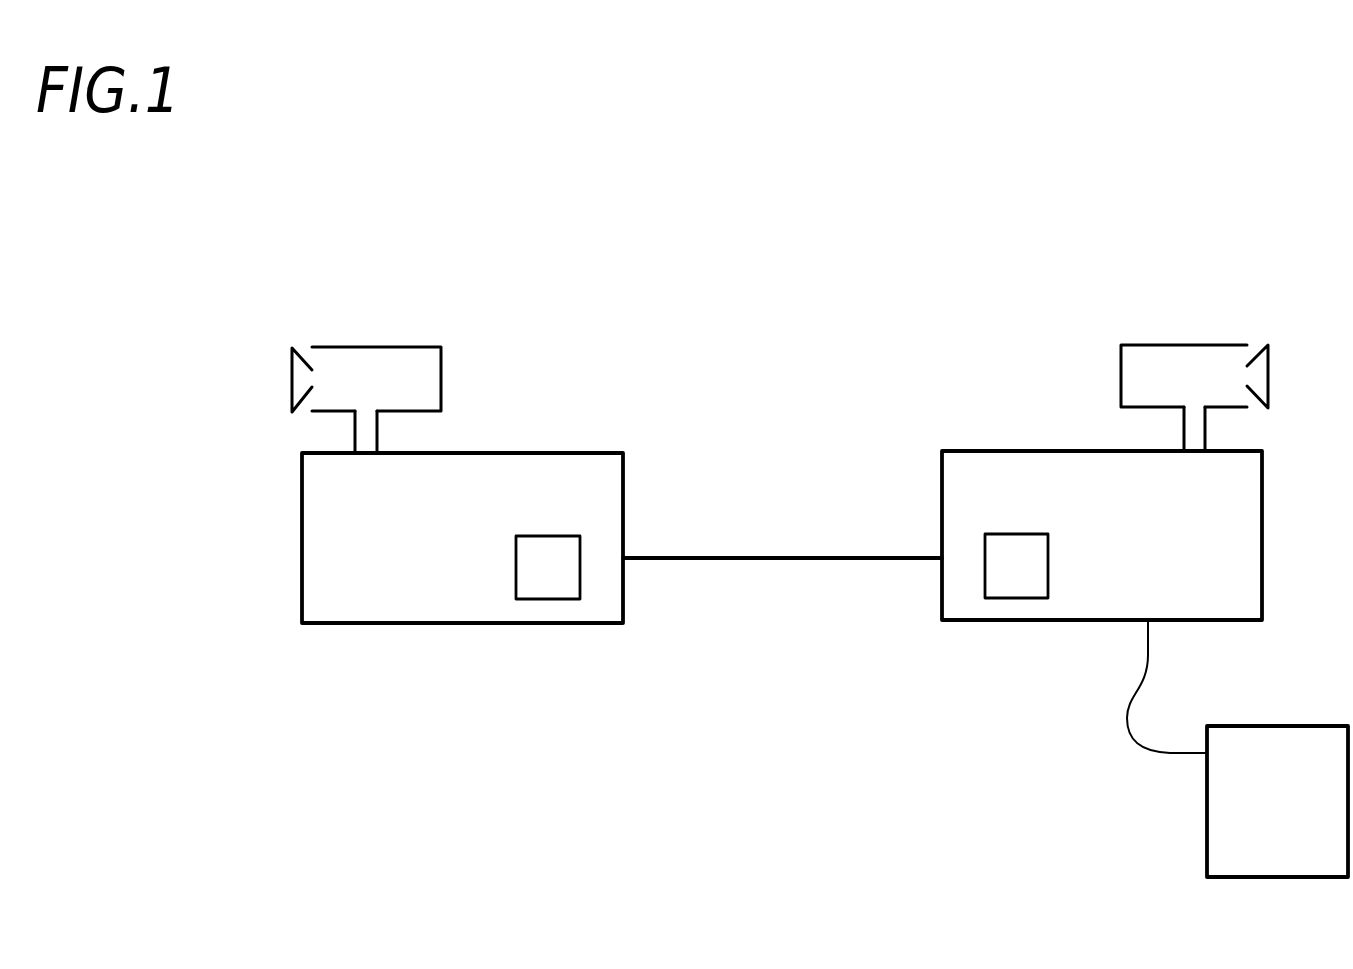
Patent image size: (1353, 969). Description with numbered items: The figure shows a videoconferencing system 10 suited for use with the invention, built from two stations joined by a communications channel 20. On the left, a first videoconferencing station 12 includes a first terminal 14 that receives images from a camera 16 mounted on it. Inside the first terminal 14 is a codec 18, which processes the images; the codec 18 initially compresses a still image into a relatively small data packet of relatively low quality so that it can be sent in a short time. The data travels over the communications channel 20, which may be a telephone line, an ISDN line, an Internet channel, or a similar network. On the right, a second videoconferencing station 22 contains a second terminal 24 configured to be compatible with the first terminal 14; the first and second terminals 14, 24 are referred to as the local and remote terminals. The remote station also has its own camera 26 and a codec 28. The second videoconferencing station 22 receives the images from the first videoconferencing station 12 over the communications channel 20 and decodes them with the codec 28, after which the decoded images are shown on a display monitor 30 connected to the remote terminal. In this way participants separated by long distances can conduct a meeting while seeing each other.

The videoconferencing system 10 is at (605, 217).
The first videoconferencing station 12 is at (530, 338).
The first terminal 14 is at (565, 452).
The camera 16 is at (368, 347).
The codec 18 is at (558, 535).
The communications channel 20 is at (789, 557).
The second videoconferencing station 22 is at (1045, 337).
The second terminal 24 is at (978, 449).
The camera 26 is at (1205, 345).
The codec 28 is at (1034, 534).
The display monitor 30 is at (1207, 808).